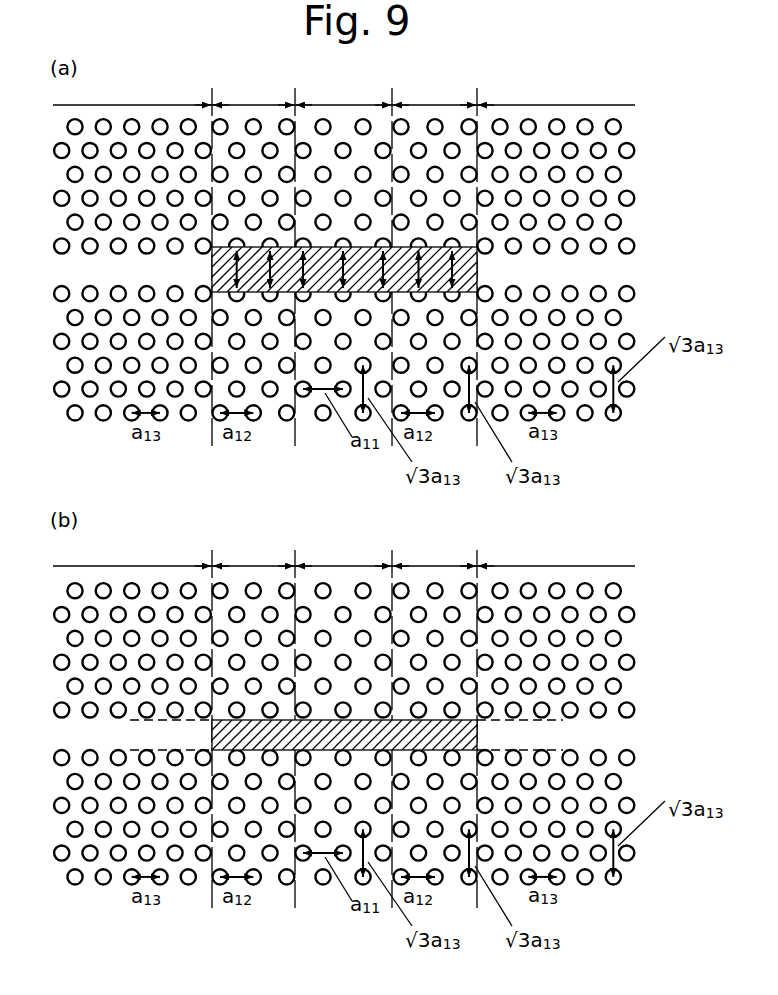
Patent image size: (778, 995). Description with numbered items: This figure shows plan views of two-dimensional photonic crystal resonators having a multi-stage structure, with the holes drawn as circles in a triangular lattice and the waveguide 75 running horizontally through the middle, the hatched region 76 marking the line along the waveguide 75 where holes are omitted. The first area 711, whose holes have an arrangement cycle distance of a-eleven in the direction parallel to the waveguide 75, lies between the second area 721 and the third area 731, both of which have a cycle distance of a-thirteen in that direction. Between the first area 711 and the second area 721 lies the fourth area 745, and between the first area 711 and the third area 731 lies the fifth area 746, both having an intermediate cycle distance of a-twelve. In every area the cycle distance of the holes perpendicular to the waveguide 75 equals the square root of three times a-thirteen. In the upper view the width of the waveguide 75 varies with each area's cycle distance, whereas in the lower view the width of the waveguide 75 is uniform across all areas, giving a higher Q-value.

The second area 721 is at (132, 483).
The fourth area 745 is at (253, 483).
The first area 711 is at (342, 483).
The fifth area 746 is at (434, 483).
The third area 731 is at (555, 483).
The waveguide 75 is at (627, 268).
The hatched region of line defect 76 is at (435, 263).